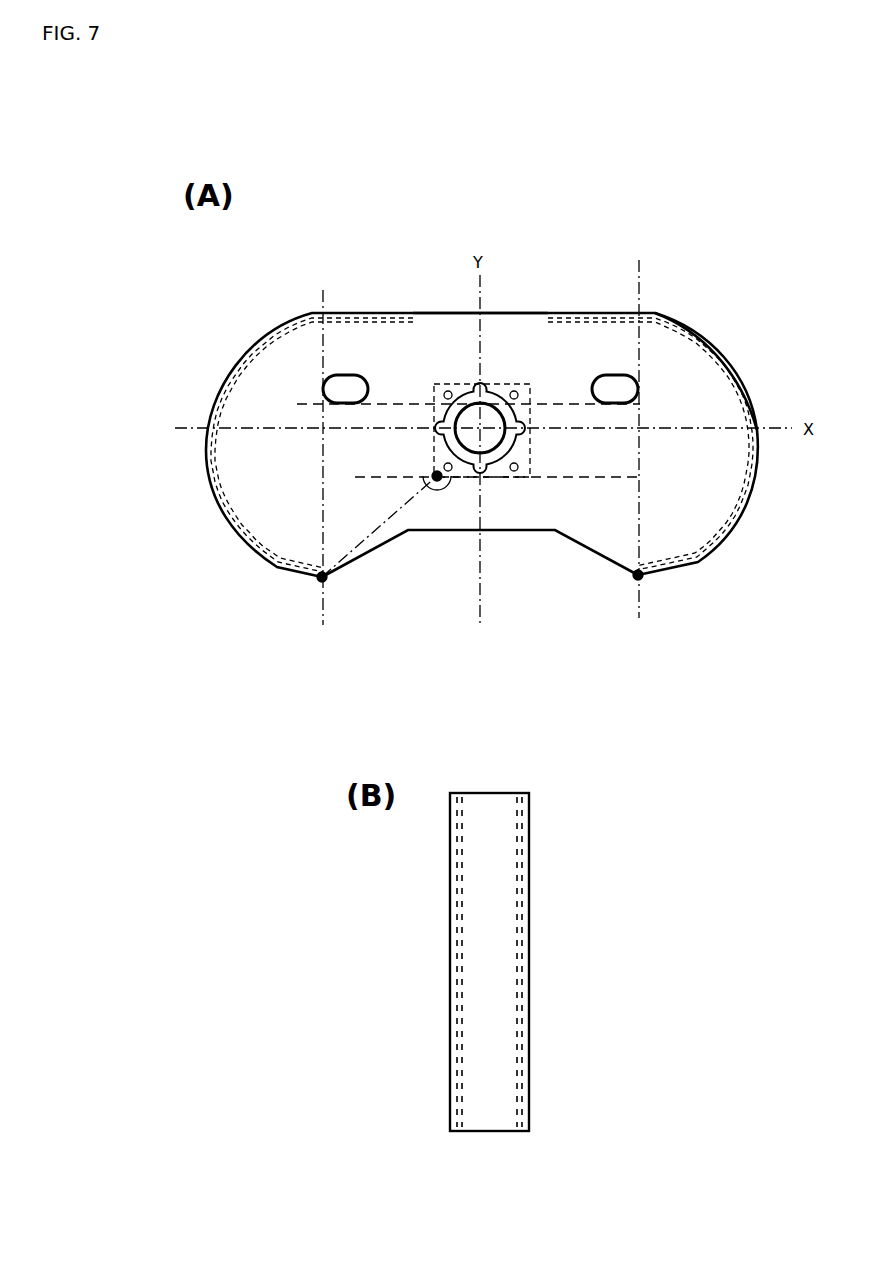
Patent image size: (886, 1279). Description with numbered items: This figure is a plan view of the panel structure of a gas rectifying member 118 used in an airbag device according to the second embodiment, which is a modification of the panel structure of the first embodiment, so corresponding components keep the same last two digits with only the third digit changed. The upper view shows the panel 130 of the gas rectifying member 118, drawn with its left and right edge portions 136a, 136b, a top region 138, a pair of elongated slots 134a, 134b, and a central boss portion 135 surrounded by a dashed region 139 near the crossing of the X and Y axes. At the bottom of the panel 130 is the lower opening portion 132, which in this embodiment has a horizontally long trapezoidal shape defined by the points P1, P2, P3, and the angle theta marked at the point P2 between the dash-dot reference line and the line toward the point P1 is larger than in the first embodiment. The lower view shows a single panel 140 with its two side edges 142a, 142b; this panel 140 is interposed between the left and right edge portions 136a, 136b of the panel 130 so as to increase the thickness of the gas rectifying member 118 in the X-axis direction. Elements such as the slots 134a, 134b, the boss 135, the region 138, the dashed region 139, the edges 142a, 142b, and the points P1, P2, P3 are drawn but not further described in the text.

The gas rectifying member 118 is at (676, 283).
The panel 130 is at (433, 312).
The lower opening portion 132 is at (583, 548).
The slot 134a is at (352, 372).
The slot 134b is at (608, 374).
The boss flange 135 is at (527, 422).
The left edge portion 136a is at (248, 357).
The right edge portion 136b is at (728, 537).
The flat portion 138 is at (507, 327).
The mounting region 139 is at (433, 442).
The panel 140 is at (530, 818).
The side edge 142a is at (455, 936).
The side edge 142b is at (522, 913).
The point P1 is at (319, 579).
The point P2 is at (437, 476).
The point P3 is at (636, 580).